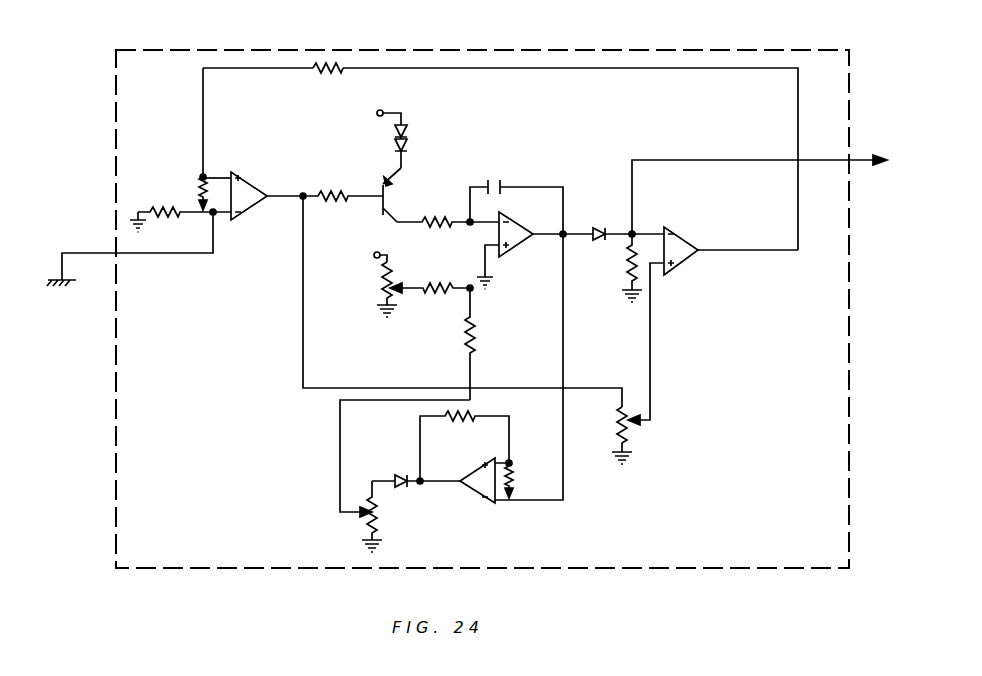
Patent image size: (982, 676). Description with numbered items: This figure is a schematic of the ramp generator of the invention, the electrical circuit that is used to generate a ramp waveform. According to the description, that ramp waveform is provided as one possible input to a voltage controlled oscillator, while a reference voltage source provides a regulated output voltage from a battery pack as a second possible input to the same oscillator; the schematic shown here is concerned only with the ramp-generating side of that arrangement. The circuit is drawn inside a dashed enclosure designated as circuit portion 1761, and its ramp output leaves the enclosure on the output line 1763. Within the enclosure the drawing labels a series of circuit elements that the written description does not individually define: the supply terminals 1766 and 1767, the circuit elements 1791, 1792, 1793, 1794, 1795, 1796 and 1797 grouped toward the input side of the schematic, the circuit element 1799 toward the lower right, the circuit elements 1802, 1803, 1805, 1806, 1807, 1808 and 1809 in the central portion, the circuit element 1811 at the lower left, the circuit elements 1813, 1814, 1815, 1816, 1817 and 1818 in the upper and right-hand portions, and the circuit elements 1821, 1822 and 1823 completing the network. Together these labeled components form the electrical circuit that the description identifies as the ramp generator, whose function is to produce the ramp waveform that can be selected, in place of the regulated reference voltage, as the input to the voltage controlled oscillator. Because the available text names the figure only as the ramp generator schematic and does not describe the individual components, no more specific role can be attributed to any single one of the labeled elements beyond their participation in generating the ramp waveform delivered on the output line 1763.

The dashed enclosure / control circuit 1761 is at (848, 247).
The output line 1763 is at (852, 163).
The +6V supply terminal 1766 is at (375, 117).
The +6V supply terminal 1767 is at (372, 256).
The operational amplifier 1791 is at (256, 186).
The resistor 1792 is at (152, 206).
The chassis ground input 1793 is at (67, 284).
The ground 1794 is at (145, 227).
The potentiometer 1795 is at (200, 173).
The resistor 1796 is at (343, 184).
The transistor 1797 is at (380, 204).
The potentiometer 1799 is at (631, 433).
The diode 1802 is at (394, 136).
The diode 1803 is at (407, 147).
The resistor 1805 is at (445, 208).
The operational amplifier 1806 is at (535, 208).
The resistor 1807 is at (442, 276).
The potentiometer 1808 is at (374, 295).
The resistor 1809 is at (474, 341).
The potentiometer 1811 is at (378, 512).
The capacitor 1813 is at (500, 183).
The operational amplifier 1814 is at (473, 464).
The diode 1815 is at (608, 206).
The resistor 1816 is at (330, 72).
The operational amplifier 1817 is at (680, 228).
The potentiometer 1818 is at (527, 466).
The diode 1821 is at (400, 474).
The resistor 1822 is at (462, 418).
The resistor 1823 is at (625, 266).